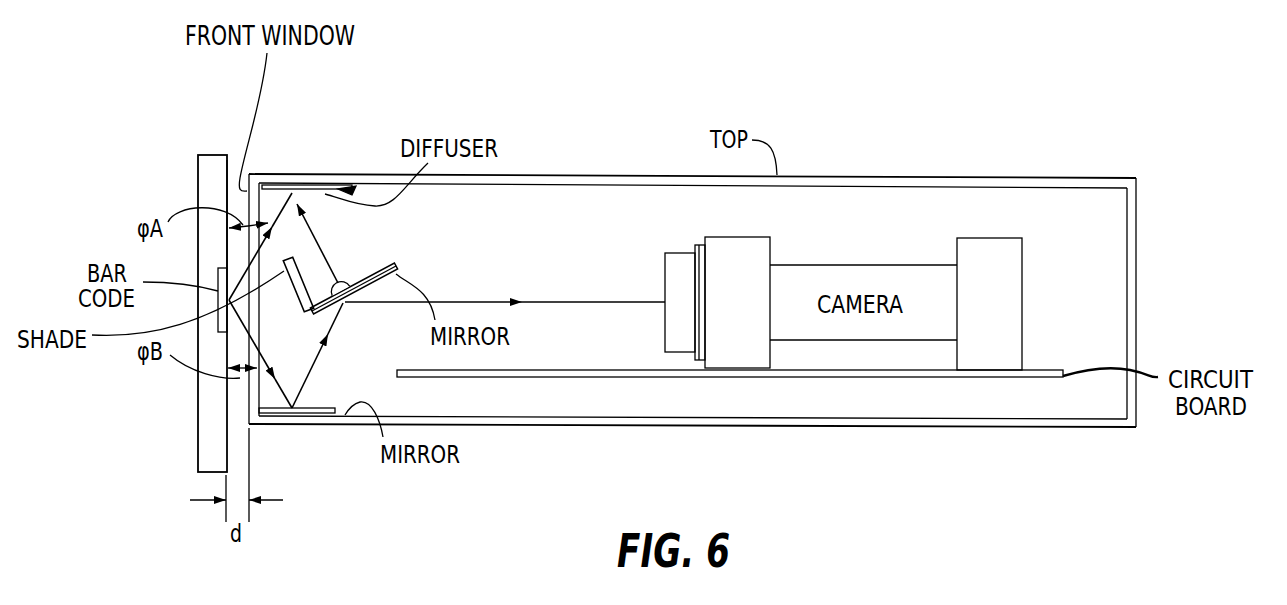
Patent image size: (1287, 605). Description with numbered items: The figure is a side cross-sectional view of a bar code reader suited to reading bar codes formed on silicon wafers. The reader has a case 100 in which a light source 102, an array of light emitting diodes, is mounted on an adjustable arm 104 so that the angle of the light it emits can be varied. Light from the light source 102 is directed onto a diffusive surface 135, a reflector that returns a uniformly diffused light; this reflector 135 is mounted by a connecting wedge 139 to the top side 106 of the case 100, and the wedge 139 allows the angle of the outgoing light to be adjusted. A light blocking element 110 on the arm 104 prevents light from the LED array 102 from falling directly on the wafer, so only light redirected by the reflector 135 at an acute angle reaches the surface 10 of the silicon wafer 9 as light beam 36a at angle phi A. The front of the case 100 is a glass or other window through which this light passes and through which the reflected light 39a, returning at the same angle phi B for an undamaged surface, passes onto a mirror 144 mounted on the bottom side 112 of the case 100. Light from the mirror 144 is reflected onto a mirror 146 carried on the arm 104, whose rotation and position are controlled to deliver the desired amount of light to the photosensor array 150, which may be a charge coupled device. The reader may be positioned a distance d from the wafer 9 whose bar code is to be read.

The silicon wafer 9 is at (203, 447).
The surface 10 is at (230, 165).
The light beam 36a is at (270, 212).
The reflected light 39a is at (285, 403).
The case 100 is at (1137, 293).
The light source 102 is at (338, 270).
The adjustable arm 104 is at (392, 257).
The top side 106 is at (663, 175).
The light blocking element 110 is at (295, 286).
The bottom side 112 is at (691, 427).
The diffusive surface 135 is at (303, 187).
The connecting wedge 139 is at (362, 188).
The mirror 144 is at (305, 410).
The mirror 146 is at (335, 318).
The photosensor array 150 is at (983, 238).